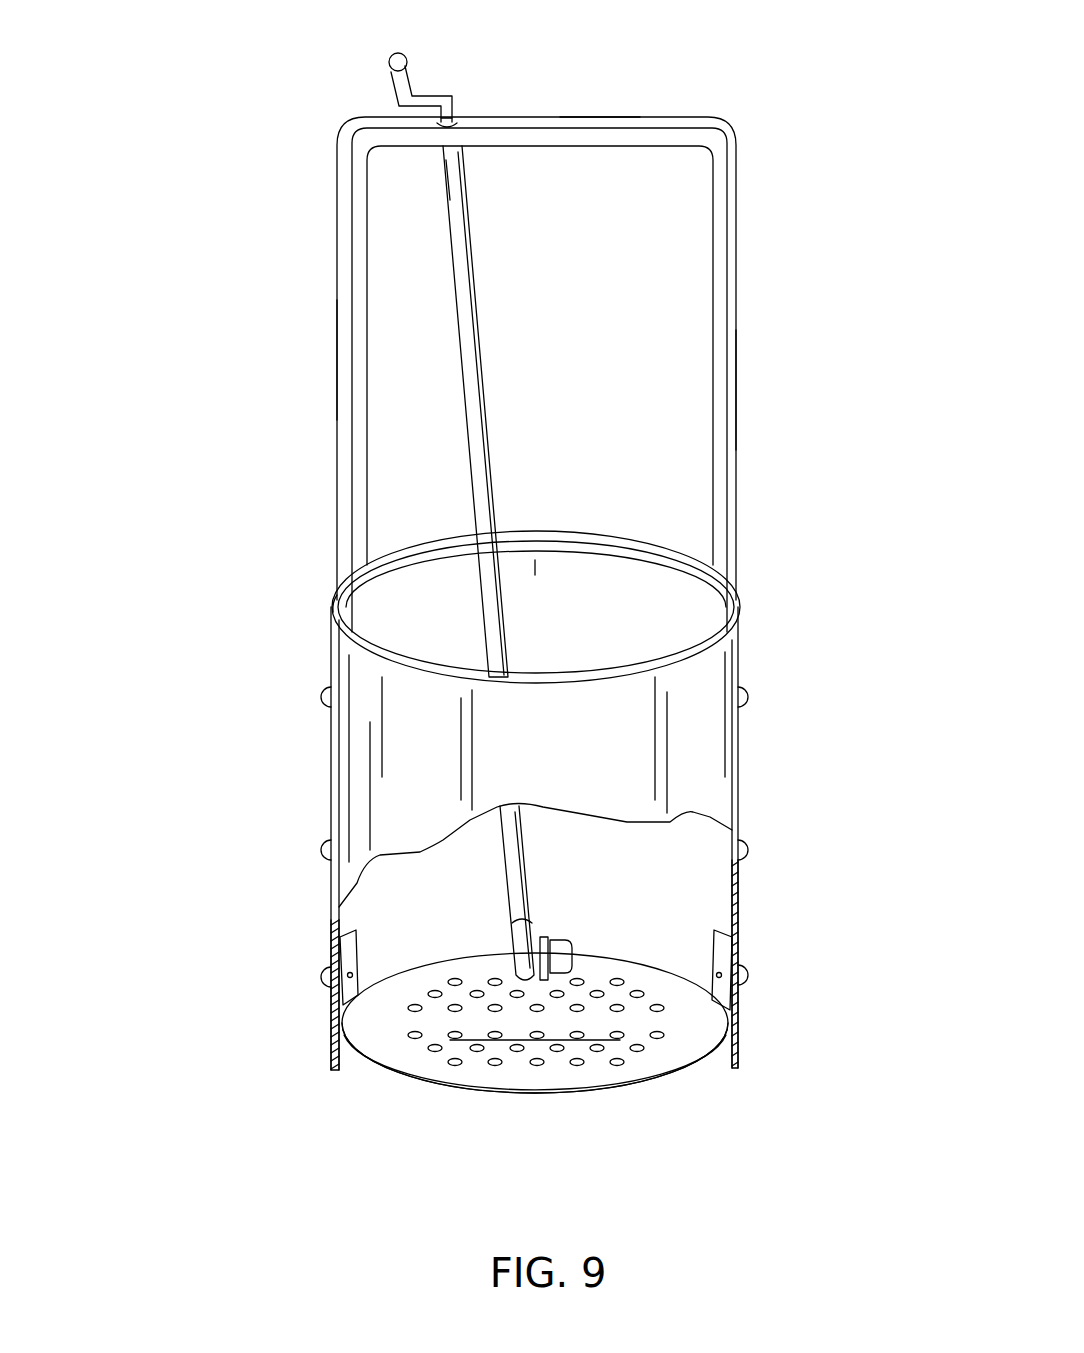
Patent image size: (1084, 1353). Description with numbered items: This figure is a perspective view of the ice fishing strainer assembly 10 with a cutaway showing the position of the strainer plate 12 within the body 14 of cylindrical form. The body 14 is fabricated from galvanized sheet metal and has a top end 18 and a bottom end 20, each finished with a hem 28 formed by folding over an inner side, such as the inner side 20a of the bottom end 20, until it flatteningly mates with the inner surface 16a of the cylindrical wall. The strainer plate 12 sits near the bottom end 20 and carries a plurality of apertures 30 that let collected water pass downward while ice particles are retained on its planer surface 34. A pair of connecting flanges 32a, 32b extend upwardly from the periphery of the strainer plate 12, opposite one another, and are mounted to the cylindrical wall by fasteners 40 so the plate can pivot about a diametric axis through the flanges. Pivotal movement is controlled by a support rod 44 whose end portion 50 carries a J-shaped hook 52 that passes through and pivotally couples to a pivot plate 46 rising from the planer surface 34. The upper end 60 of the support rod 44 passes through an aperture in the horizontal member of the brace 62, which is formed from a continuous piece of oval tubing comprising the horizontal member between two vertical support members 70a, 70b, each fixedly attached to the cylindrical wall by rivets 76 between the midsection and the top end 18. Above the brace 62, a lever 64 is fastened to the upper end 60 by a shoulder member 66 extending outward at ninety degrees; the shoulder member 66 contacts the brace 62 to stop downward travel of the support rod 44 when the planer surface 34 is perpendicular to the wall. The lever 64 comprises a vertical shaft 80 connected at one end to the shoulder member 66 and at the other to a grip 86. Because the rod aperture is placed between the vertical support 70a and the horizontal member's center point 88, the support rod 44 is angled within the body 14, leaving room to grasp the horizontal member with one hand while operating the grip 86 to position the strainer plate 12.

The ice fishing strainer assembly 10 is at (216, 1106).
The strainer plate 12 is at (620, 1094).
The body 14 is at (534, 838).
The inner surface of the cylindrical wall 16a is at (535, 575).
The top end 18 is at (334, 620).
The bottom end 20 is at (331, 1072).
The inner side of the bottom end 20a is at (742, 1047).
The hem 28 is at (598, 535).
The apertures 30 is at (492, 1062).
The connecting flange 32a is at (338, 945).
The connecting flange 32b is at (736, 920).
The planer surface 34 is at (545, 1078).
The fasteners 40 is at (321, 985).
The support rod 44 is at (482, 360).
The pivot plate 46 is at (543, 950).
The end portion of the support rod 50 is at (505, 905).
The J-shaped hook 52 is at (562, 940).
The upper end of the support rod 60 is at (465, 165).
The brace 62 is at (672, 117).
The lever 64 is at (400, 108).
The shoulder member 66 is at (455, 99).
The vertical support member 70a is at (337, 362).
The vertical support member 70b is at (738, 405).
The rivets 76 is at (746, 690).
The vertical shaft 80 is at (422, 82).
The grip 86 is at (393, 55).
The center point of the horizontal member 88 is at (545, 117).